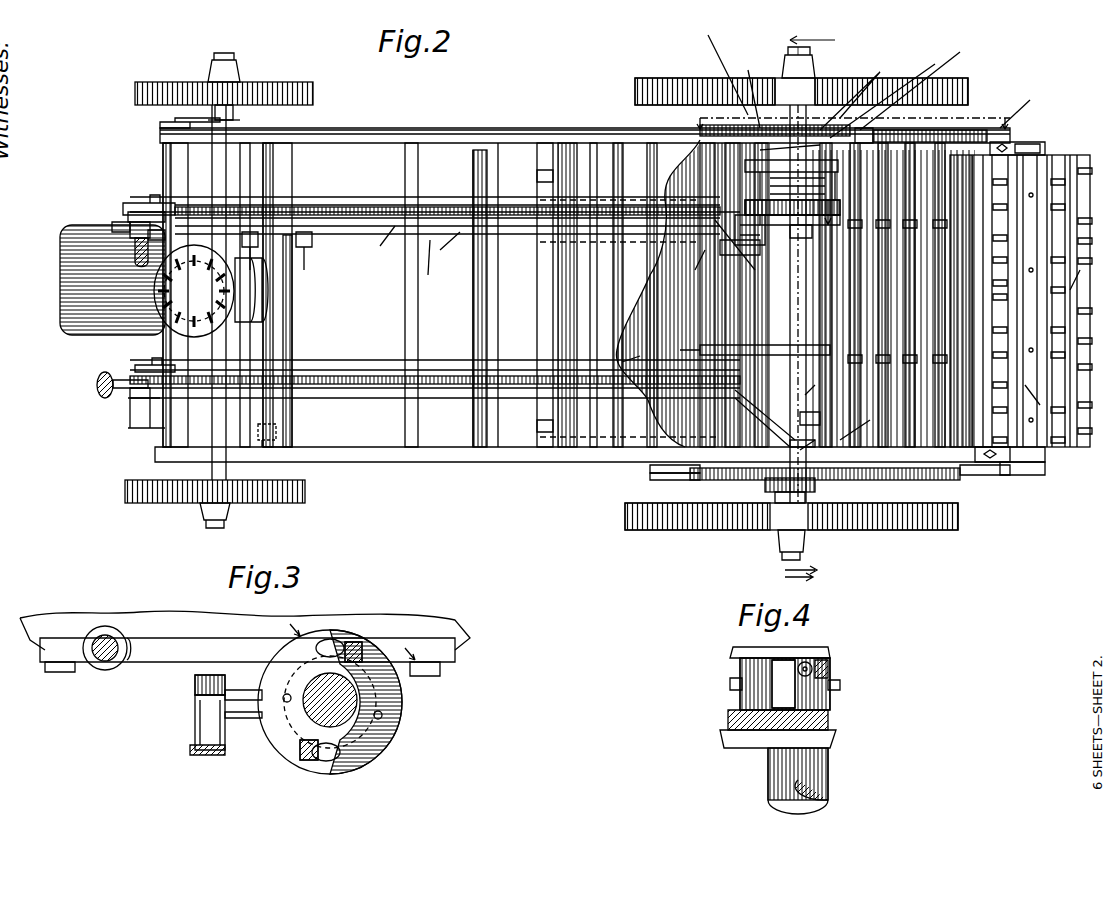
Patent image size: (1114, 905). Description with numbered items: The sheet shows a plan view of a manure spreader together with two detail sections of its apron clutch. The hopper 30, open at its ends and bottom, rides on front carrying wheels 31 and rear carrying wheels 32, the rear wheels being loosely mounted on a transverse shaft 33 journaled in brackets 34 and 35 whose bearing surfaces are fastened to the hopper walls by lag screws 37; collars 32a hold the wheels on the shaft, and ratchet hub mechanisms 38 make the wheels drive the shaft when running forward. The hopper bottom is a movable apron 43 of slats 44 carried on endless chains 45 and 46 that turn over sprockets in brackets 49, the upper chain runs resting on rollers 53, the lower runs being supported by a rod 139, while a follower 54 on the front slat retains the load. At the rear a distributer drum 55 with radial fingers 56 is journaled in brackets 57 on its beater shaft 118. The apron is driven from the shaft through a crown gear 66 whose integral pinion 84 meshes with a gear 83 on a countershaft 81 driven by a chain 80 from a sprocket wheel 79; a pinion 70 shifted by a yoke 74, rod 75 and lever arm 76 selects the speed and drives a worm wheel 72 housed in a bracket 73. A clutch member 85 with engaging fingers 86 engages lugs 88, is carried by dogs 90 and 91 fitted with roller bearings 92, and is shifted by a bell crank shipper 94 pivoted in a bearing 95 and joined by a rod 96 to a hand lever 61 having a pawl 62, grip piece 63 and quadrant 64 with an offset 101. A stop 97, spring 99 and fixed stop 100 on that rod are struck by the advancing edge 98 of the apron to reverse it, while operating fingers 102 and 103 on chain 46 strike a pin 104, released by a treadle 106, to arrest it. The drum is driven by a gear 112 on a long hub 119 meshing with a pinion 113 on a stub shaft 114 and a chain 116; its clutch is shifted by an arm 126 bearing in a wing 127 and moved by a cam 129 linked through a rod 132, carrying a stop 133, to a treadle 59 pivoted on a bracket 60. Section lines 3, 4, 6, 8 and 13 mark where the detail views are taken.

In FIG. 2, the hopper 30 is at (385, 128).
In FIG. 3, the hopper 30 is at (440, 628).
In FIG. 2, the front carrying wheels 31 is at (305, 84).
In FIG. 2, the rear carrying wheels 32 is at (662, 82).
In FIG. 2, the collars 32a is at (812, 62).
In FIG. 2, the shaft 33 is at (810, 60).
In FIG. 3, the shaft 33 is at (355, 715).
In FIG. 4, the shaft 33 is at (800, 788).
In FIG. 2, the bracket 34 is at (861, 430).
In FIG. 2, the bracket 35 is at (755, 160).
In FIG. 3, the bracket 35 is at (262, 645).
In FIG. 3, the lag screws 37 is at (55, 672).
In FIG. 2, the ratchet hub mechanism 38 is at (752, 552).
In FIG. 2, the movable apron 43 is at (868, 342).
In FIG. 2, the slats 44 is at (755, 352).
In FIG. 2, the endless chain 45 is at (340, 370).
In FIG. 2, the endless chain 46 is at (372, 212).
In FIG. 2, the brackets 49 is at (158, 200).
In FIG. 2, the rollers 53 is at (700, 215).
In FIG. 2, the front board or follower 54 is at (555, 314).
In FIG. 2, the distributer or drum 55 is at (1060, 160).
In FIG. 2, the radial fingers 56 is at (1056, 331).
In FIG. 2, the brackets 57 is at (1035, 140).
In FIG. 2, the treadle 59 is at (98, 392).
In FIG. 2, the bracket 60 is at (130, 425).
In FIG. 2, the hand lever 61 is at (135, 222).
In FIG. 2, the pawl 62 is at (166, 231).
In FIG. 2, the grip piece 63 is at (112, 280).
In FIG. 2, the quadrant 64 is at (115, 225).
In FIG. 2, the crown gear 66 is at (747, 88).
In FIG. 2, the pinion 70 is at (886, 93).
In FIG. 2, the worm wheel 72 is at (1021, 105).
In FIG. 2, the bracket 73 is at (980, 130).
In FIG. 2, the yoke 74 is at (920, 83).
In FIG. 2, the rod 75 is at (492, 128).
In FIG. 2, the lever arm 76 is at (232, 124).
In FIG. 2, the sprocket wheel 79 is at (812, 200).
In FIG. 2, the chain 80 is at (775, 245).
In FIG. 2, the countershaft 81 is at (723, 66).
In FIG. 2, the gear 83 is at (698, 130).
In FIG. 2, the pinion 84 is at (795, 91).
In FIG. 2, the clutch member 85 is at (838, 190).
In FIG. 3, the engaging fingers 86 is at (332, 640).
In FIG. 4, the engaging fingers 86 is at (785, 682).
In FIG. 4, the lugs 88 is at (740, 715).
In FIG. 3, the dog 90 is at (298, 706).
In FIG. 4, the dog 90 is at (818, 700).
In FIG. 2, the dog 91 is at (800, 144).
In FIG. 3, the roller bearings 92 is at (355, 640).
In FIG. 4, the roller bearings 92 is at (818, 664).
In FIG. 2, the bell crank shipper 94 is at (739, 249).
In FIG. 3, the bell crank shipper 94 is at (198, 730).
In FIG. 3, the bearing 95 is at (190, 680).
In FIG. 2, the rod 96 is at (567, 254).
In FIG. 2, the stop 97 is at (310, 256).
In FIG. 2, the advancing edge 98 is at (626, 356).
In FIG. 2, the spring 99 is at (264, 256).
In FIG. 2, the stop 100 is at (265, 290).
In FIG. 2, the offset 101 is at (113, 246).
In FIG. 2, the operating finger 102 is at (385, 246).
In FIG. 2, the operating finger 103 is at (435, 262).
In FIG. 2, the pin 104 is at (150, 212).
In FIG. 2, the treadle 106 is at (194, 291).
In FIG. 2, the gear 112 is at (870, 484).
In FIG. 2, the pinion 113 is at (690, 478).
In FIG. 2, the stub shaft 114 is at (715, 530).
In FIG. 2, the chain 116 is at (1000, 494).
In FIG. 2, the beater shaft 118 is at (1035, 478).
In FIG. 2, the hub 119 is at (785, 456).
In FIG. 2, the arm 126 is at (810, 410).
In FIG. 2, the wing 127 is at (830, 418).
In FIG. 2, the cam 129 is at (810, 456).
In FIG. 2, the rod 132 is at (330, 440).
In FIG. 2, the stop 133 is at (278, 428).
In FIG. 2, the rod 139 is at (418, 310).
In FIG. 2, the section line 3— 3 is at (837, 221).
In FIG. 3, the section line 4— 4 is at (356, 639).
In FIG. 2, the section line 6— 6 is at (851, 116).
In FIG. 2, the section line 8— 8 is at (808, 268).
In FIG. 2, the section line 13— 13 is at (835, 395).
In FIG. 4, the section line 13— 13 is at (796, 586).